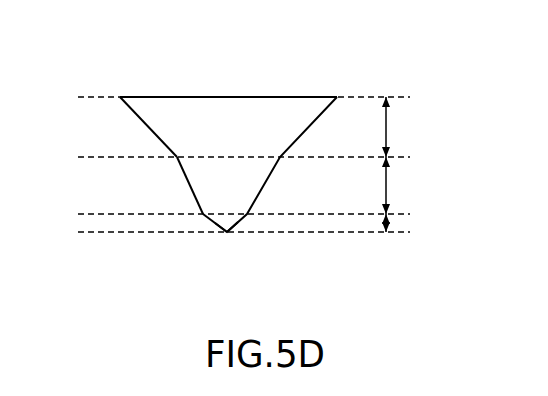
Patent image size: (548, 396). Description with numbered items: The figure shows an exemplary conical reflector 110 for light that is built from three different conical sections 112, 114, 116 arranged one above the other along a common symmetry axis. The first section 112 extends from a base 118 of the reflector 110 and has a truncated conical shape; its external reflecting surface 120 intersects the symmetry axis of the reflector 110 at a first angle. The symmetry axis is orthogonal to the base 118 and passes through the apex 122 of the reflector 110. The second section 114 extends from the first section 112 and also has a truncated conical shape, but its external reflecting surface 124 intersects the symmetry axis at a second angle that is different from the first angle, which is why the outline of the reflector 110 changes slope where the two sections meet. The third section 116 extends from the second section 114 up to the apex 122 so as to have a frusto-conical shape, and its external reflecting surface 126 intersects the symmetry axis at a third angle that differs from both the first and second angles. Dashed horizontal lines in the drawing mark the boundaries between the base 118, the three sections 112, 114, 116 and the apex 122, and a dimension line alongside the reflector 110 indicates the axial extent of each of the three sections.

The conical reflector 110 is at (235, 108).
The first section 112 is at (386, 132).
The second section 114 is at (386, 190).
The third section 116 is at (386, 225).
The base 118 is at (180, 95).
The external reflecting surface of the first section 120 is at (133, 120).
The apex 122 is at (229, 236).
The external reflecting surface of the second section 124 is at (178, 178).
The external reflecting surface of the third section 126 is at (200, 223).